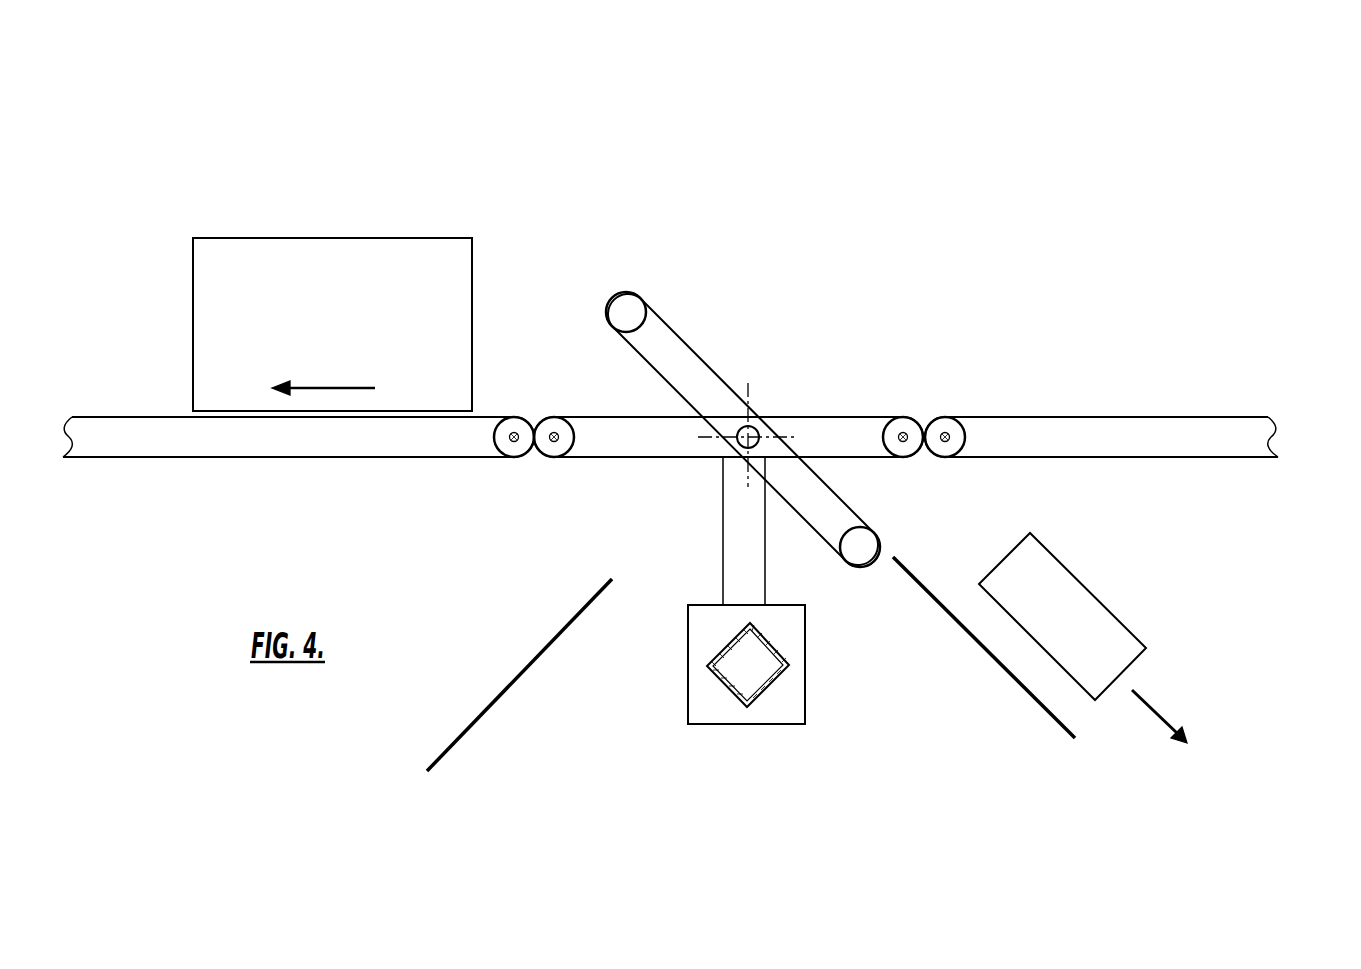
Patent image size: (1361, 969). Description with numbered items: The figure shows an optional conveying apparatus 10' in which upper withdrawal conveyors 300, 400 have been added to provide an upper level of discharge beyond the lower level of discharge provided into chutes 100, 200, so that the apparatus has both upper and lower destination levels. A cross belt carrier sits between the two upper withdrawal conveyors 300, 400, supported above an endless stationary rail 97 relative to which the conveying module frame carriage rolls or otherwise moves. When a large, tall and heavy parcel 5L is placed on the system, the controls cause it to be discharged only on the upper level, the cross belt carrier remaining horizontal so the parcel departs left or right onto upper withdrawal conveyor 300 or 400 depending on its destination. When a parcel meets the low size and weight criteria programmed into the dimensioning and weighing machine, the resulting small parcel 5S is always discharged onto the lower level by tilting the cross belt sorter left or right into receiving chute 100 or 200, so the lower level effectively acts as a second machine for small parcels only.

The optional conveying apparatus 10' is at (861, 322).
The upper withdrawal conveyor 300 is at (154, 437).
The upper withdrawal conveyor 400 is at (1134, 430).
The large parcels 5L is at (340, 363).
The small parcels 5S is at (1069, 629).
The chute 100 is at (462, 735).
The chute 200 is at (1037, 705).
The endless stationary rail 97 is at (748, 666).